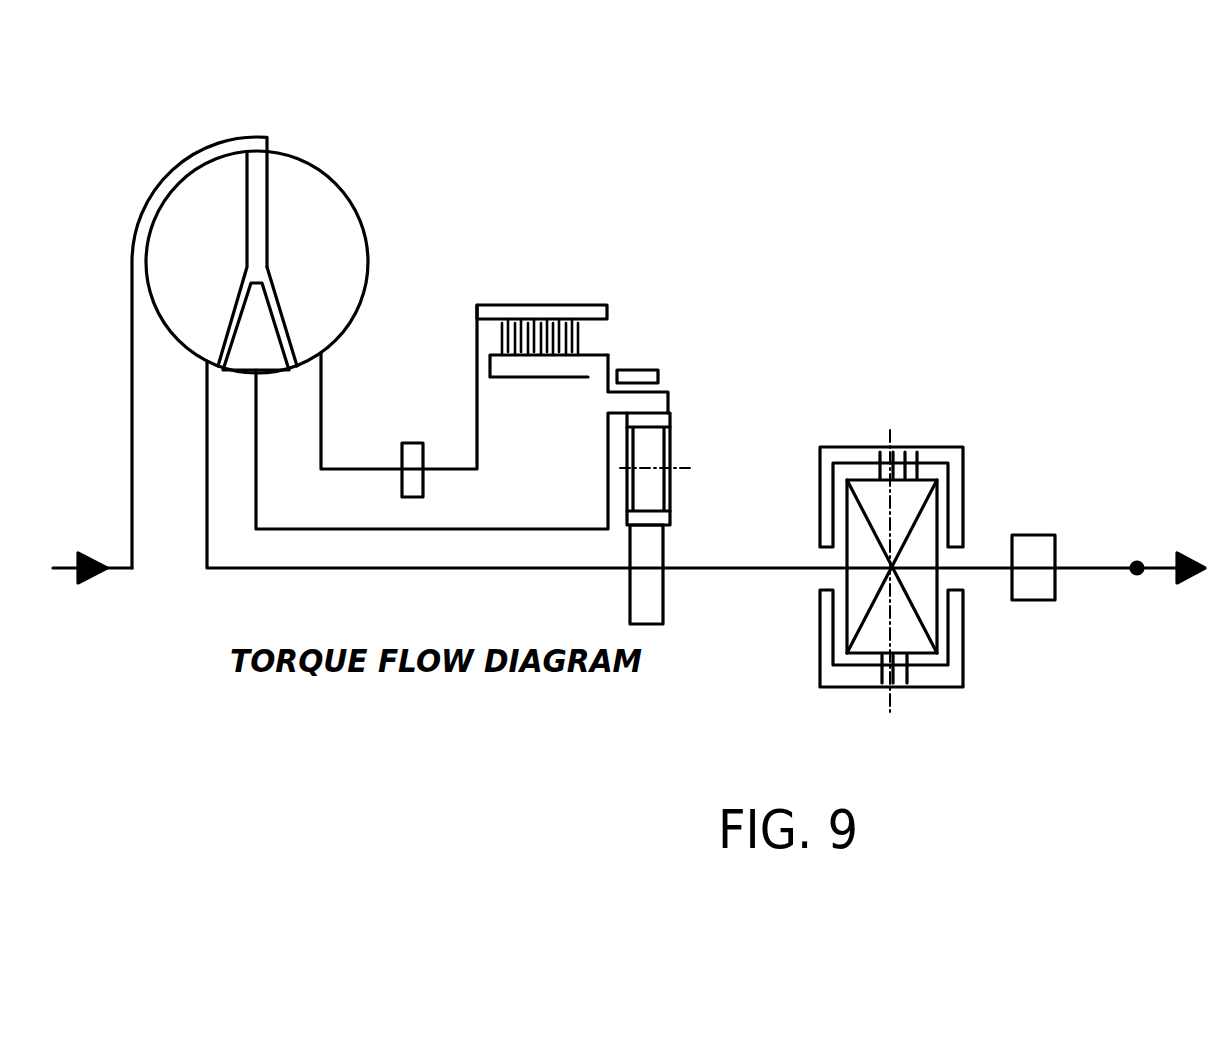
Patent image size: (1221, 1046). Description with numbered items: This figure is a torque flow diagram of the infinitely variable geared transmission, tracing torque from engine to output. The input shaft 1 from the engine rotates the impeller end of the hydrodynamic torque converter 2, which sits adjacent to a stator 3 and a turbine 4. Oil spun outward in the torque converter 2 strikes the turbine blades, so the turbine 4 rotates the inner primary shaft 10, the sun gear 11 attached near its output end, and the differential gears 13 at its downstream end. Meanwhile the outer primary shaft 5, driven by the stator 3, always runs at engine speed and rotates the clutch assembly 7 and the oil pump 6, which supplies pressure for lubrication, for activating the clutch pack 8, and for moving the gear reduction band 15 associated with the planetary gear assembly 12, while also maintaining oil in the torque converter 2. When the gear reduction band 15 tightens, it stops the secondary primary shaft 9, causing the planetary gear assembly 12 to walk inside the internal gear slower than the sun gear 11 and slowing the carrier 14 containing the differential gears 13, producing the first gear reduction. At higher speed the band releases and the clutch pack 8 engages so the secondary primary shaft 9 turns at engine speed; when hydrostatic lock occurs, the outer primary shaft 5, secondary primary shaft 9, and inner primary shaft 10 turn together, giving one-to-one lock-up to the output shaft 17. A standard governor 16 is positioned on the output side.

The input shaft 1 is at (90, 552).
The hydrodynamic torque converter 2 is at (358, 222).
The stator 3 is at (273, 378).
The turbine 4 is at (165, 192).
The outer primary shaft 5 is at (322, 440).
The oil pump 6 is at (415, 442).
The clutch assembly 7 is at (547, 303).
The clutch pack 8 is at (585, 340).
The secondary primary shaft 9 is at (503, 527).
The inner primary shaft 10 is at (513, 570).
The sun gear 11 is at (665, 610).
The planetary gear assembly 12 is at (672, 442).
The differential gears 13 is at (925, 457).
The carrier 14 is at (842, 447).
The gear reduction band 15 is at (647, 372).
The governor 16 is at (1033, 533).
The output shaft 17 is at (1110, 563).